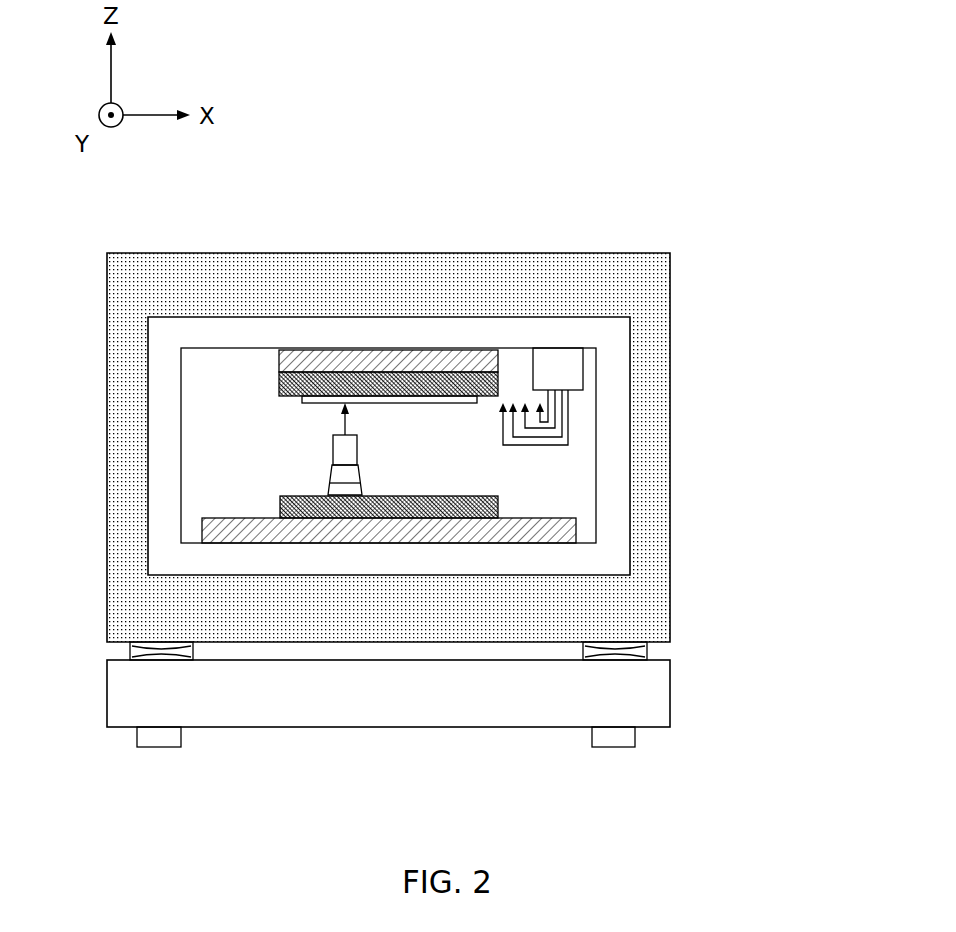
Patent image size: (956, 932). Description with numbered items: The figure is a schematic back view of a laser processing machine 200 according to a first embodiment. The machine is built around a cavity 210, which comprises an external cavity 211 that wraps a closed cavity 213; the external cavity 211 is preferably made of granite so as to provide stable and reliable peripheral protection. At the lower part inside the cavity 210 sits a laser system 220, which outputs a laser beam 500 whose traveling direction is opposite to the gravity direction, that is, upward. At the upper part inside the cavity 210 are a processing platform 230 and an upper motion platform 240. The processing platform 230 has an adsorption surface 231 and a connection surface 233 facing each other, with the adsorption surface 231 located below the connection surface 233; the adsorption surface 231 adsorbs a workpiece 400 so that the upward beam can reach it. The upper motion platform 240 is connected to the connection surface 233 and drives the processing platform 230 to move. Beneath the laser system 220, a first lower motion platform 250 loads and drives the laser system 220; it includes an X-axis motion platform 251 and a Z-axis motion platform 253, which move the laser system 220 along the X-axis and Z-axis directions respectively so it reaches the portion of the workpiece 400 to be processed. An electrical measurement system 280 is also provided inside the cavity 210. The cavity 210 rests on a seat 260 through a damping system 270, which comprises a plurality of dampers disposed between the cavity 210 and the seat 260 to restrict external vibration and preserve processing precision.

The laser processing machine 200 is at (118, 207).
The cavity 210 is at (741, 144).
The external cavity 211 is at (583, 273).
The closed cavity 213 is at (615, 340).
The laser system 220 is at (362, 473).
The processing platform 230 is at (269, 384).
The adsorption surface 231 is at (268, 401).
The connection surface 233 is at (268, 373).
The upper motion platform 240 is at (278, 352).
The first lower motion platform 250 is at (519, 513).
The X-axis motion platform 251 is at (577, 529).
The Z-axis motion platform 253 is at (497, 500).
The seat 260 is at (107, 707).
The damping system 270 is at (128, 657).
The electrical measurement system 280 is at (532, 367).
The workpiece 400 is at (317, 405).
The laser beam 500 is at (347, 417).